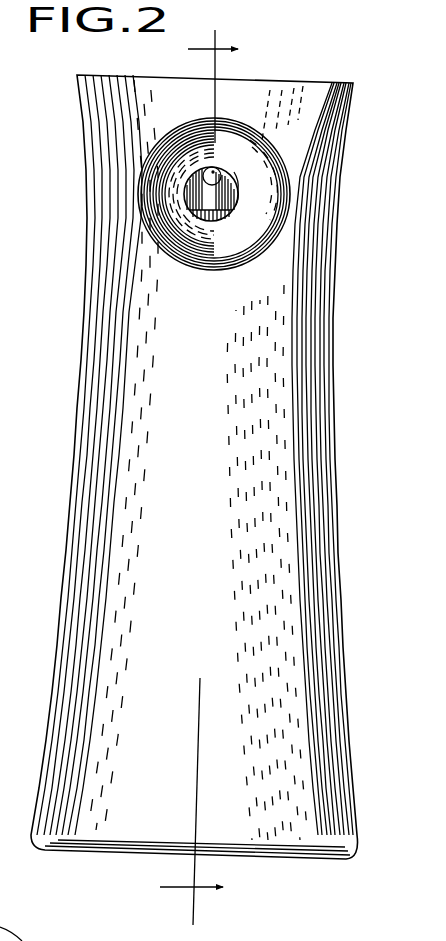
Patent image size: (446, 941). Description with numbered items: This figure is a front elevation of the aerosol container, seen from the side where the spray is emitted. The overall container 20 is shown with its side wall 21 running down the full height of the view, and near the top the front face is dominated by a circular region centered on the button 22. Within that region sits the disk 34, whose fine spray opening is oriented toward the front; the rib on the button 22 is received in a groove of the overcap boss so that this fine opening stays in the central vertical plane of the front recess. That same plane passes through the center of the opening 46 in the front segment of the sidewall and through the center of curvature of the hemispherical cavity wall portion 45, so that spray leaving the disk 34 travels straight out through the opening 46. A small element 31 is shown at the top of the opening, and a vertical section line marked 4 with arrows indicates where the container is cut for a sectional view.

The handle body 20 is at (80, 218).
The side wall of handle 21 is at (341, 481).
The button 22 is at (220, 180).
The ball 31 is at (213, 168).
The disk 34 is at (235, 175).
The hemispherical cavity wall portion 45 is at (268, 226).
The opening 46 is at (235, 192).
The section line 4- 4 is at (186, 477).